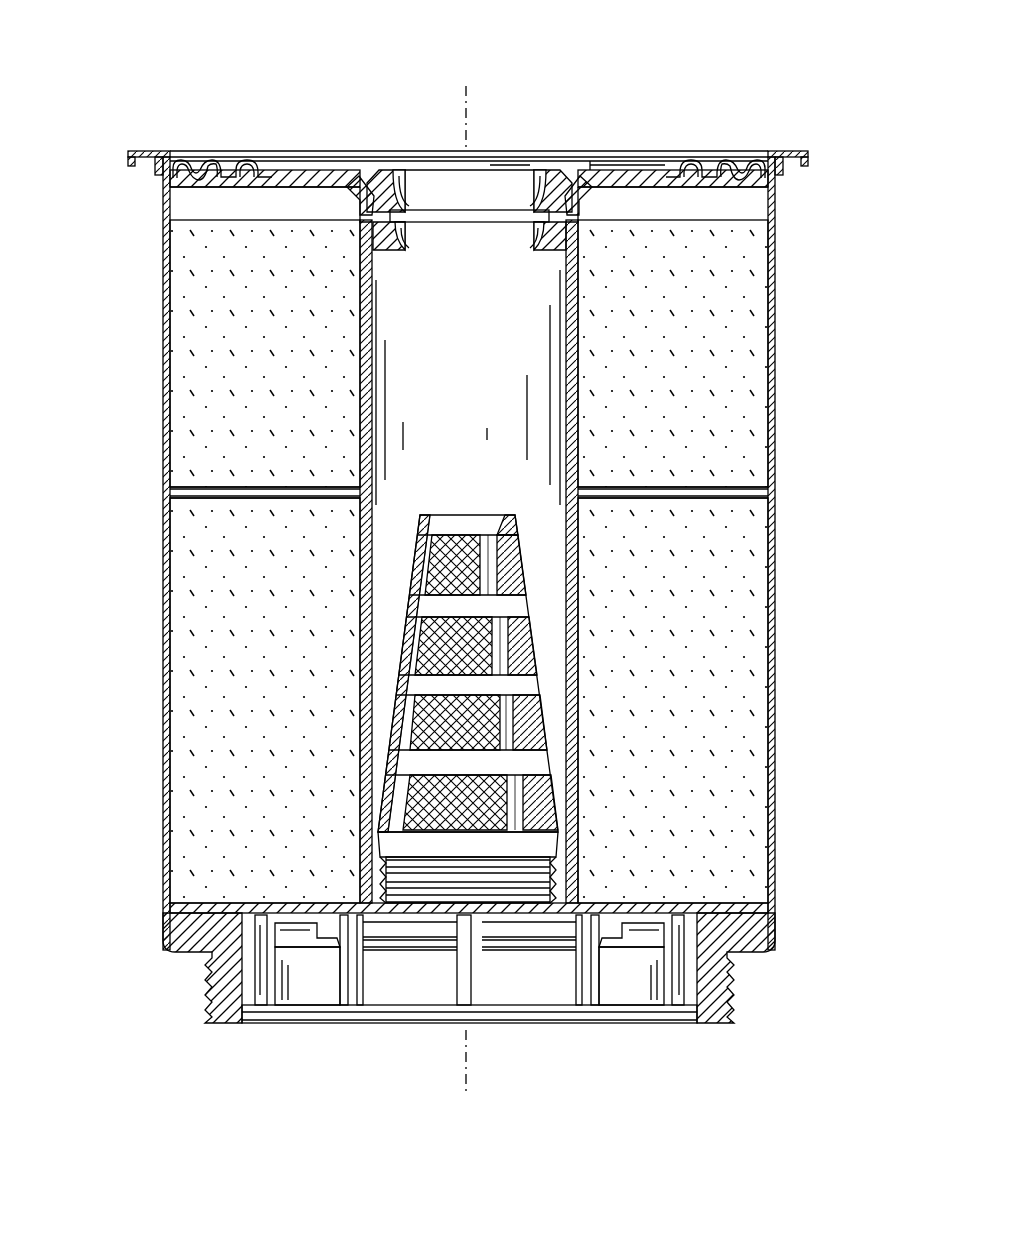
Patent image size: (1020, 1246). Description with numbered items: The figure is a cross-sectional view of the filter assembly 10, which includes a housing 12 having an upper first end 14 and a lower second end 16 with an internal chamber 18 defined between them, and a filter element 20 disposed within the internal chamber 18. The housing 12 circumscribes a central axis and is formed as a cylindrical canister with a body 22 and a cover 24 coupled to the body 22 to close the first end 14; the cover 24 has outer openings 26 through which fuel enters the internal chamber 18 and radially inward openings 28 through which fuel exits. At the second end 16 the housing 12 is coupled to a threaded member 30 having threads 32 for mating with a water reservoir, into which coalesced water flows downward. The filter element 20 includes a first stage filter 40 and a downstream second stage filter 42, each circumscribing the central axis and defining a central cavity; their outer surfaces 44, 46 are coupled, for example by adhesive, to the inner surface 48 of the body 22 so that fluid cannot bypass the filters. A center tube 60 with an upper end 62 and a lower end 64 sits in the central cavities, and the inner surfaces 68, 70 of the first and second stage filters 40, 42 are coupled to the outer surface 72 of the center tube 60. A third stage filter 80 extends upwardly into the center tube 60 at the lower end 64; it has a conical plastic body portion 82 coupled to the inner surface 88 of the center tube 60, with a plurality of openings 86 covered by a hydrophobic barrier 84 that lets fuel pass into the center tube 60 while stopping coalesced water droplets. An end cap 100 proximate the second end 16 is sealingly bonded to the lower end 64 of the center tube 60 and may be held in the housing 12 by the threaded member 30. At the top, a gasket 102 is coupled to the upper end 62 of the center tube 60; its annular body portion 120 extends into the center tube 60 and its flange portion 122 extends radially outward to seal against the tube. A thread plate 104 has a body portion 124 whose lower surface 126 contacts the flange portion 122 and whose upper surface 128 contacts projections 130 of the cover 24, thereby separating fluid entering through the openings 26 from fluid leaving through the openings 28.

The filter assembly 10 is at (832, 72).
The housing 12 is at (780, 594).
The first end 14 is at (782, 176).
The second end 16 is at (746, 955).
The internal chamber 18 is at (773, 222).
The filter element 20 is at (760, 526).
The body 22 is at (777, 440).
The cover 24 is at (795, 150).
The openings 26 is at (712, 178).
The openings 28 is at (520, 166).
The threaded member 30 is at (731, 1020).
The threads 32 is at (735, 995).
The first stage filter 40 is at (745, 325).
The second stage filter 42 is at (745, 665).
The outer surface 44 is at (170, 290).
The outer surface 46 is at (168, 640).
The inner surface 48 is at (170, 492).
The center tube 60 is at (370, 404).
The upper end 62 is at (352, 220).
The lower end 64 is at (410, 805).
The inner surface 68 is at (360, 360).
The inner surface 70 is at (366, 746).
The outer surface 72 is at (352, 492).
The third stage filter 80 is at (388, 889).
The body portion 82 is at (412, 798).
The hydrophobic barrier 84 is at (400, 720).
The openings 86 is at (386, 851).
The inner surface 88 is at (386, 660).
The end cap 100 is at (760, 908).
The gasket 102 is at (560, 218).
The thread plate 104 is at (724, 206).
The body portion 120 is at (412, 222).
The flange portion 122 is at (338, 192).
The body portion 124 is at (272, 186).
The lower surface 126 is at (336, 194).
The upper surface 128 is at (606, 172).
The projections 130 is at (232, 152).